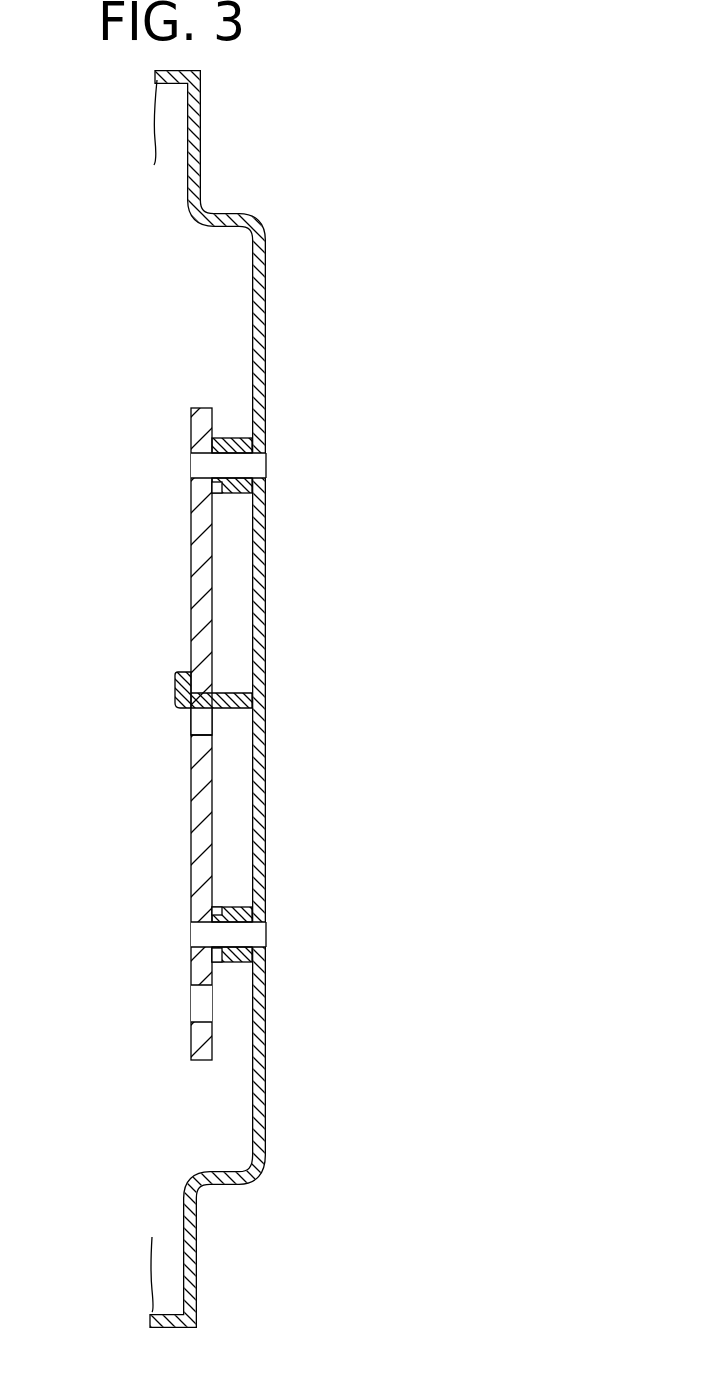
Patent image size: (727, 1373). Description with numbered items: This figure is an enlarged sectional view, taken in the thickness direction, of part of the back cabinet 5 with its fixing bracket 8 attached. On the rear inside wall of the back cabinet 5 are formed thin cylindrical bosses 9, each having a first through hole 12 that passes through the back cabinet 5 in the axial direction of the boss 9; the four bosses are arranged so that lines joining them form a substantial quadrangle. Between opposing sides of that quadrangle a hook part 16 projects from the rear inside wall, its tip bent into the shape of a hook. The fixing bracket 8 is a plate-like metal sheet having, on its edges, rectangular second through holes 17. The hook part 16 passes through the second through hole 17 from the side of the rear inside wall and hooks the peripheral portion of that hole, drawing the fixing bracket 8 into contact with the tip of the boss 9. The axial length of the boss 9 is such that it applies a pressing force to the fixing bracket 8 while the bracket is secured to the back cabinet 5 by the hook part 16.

The back cabinet 5 is at (266, 1077).
The fixing bracket 8 is at (191, 433).
The boss 9 is at (260, 527).
The first through hole 12 is at (255, 470).
The hook part 16 is at (176, 683).
The second through hole 17 is at (198, 723).